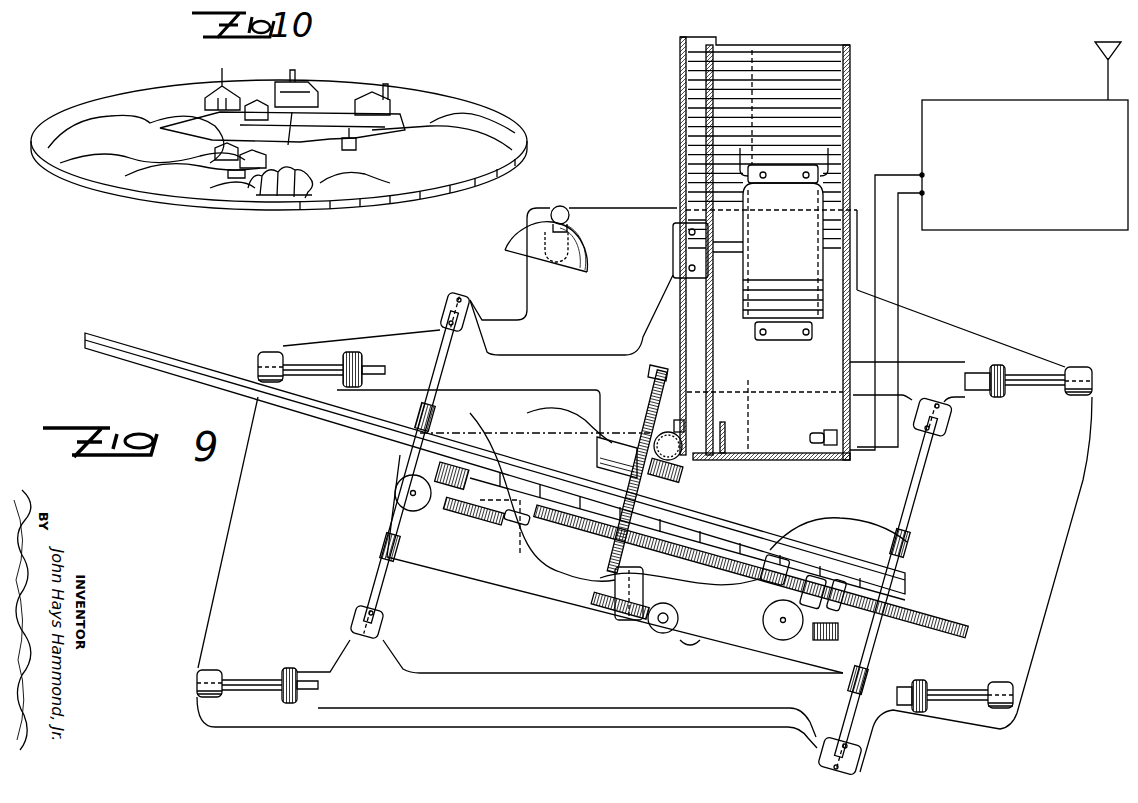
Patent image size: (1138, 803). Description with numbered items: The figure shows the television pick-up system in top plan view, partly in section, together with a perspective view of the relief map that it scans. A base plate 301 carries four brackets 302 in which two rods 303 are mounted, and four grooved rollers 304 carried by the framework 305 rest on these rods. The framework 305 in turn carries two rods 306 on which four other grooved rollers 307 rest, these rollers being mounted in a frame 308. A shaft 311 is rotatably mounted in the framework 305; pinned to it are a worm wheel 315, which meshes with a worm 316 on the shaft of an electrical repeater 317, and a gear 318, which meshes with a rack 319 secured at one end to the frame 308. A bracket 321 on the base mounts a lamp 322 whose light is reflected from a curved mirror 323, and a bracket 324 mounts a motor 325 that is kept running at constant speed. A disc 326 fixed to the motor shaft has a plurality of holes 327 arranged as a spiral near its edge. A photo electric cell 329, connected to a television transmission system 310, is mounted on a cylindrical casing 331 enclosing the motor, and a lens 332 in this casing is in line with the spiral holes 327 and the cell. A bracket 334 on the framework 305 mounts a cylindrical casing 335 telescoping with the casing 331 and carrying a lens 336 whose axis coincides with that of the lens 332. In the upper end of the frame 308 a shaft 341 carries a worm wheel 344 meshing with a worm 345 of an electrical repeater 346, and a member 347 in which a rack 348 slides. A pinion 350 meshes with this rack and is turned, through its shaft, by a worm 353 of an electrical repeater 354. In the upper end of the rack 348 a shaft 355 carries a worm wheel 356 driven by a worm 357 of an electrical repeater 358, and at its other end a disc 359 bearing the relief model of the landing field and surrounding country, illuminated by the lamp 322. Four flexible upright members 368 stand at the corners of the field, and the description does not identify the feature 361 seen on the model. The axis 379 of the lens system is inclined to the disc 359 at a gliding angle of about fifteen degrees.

In FIG. 9, the base plate 301 is at (232, 532).
In FIG. 9, the brackets 302 is at (272, 352).
In FIG. 9, the rods 303 is at (310, 365).
In FIG. 9, the grooved rollers 304 is at (355, 352).
In FIG. 9, the framework 305 is at (548, 342).
In FIG. 9, the rods 306 is at (430, 336).
In FIG. 9, the grooved rollers 307 is at (418, 406).
In FIG. 9, the frame 308 is at (485, 577).
In FIG. 9, the television transmission system 310 is at (1014, 100).
In FIG. 9, the shaft 311 is at (672, 420).
In FIG. 9, the worm wheel 315 is at (684, 455).
In FIG. 9, the worm 316 is at (656, 478).
In FIG. 9, the electrical repeater 317 is at (600, 452).
In FIG. 9, the gear 318 is at (603, 466).
In FIG. 9, the rack 319 is at (655, 377).
In FIG. 9, the bracket 321 is at (562, 207).
In FIG. 9, the lamp 322 is at (524, 258).
In FIG. 9, the curved mirror 323 is at (520, 236).
In FIG. 9, the bracket 324 is at (898, 264).
In FIG. 9, the motor 325 is at (780, 190).
In FIG. 9, the disc 326 is at (740, 152).
In FIG. 9, the holes 327 is at (680, 60).
In FIG. 9, the photo electric cell 329 is at (826, 432).
In FIG. 9, the cylindrical casing 331 is at (806, 460).
In FIG. 9, the lens 332 is at (727, 436).
In FIG. 9, the bracket 334 is at (673, 255).
In FIG. 9, the cylindrical casing 335 is at (680, 168).
In FIG. 9, the lens 336 is at (690, 425).
In FIG. 9, the shaft 341 is at (617, 620).
In FIG. 9, the worm wheel 344 is at (605, 615).
In FIG. 9, the worm 345 is at (688, 645).
In FIG. 9, the electrical repeater 346 is at (676, 635).
In FIG. 9, the member 347 is at (707, 600).
In FIG. 9, the rack 348 is at (925, 610).
In FIG. 9, the pinion 350 is at (864, 553).
In FIG. 9, the worm 353 is at (820, 642).
In FIG. 9, the electrical repeater 354 is at (796, 640).
In FIG. 9, the shaft 355 is at (507, 537).
In FIG. 9, the worm wheel 356 is at (495, 525).
In FIG. 9, the worm 357 is at (460, 520).
In FIG. 9, the electrical repeater 358 is at (395, 495).
In FIG. 10, the disc 359 is at (279, 139).
In FIG. 9, the disc 359 is at (370, 428).
In FIG. 10, the signal tower 361 is at (350, 145).
In FIG. 10, the upright members 368 is at (212, 133).
In FIG. 9, the axis 379 is at (523, 392).